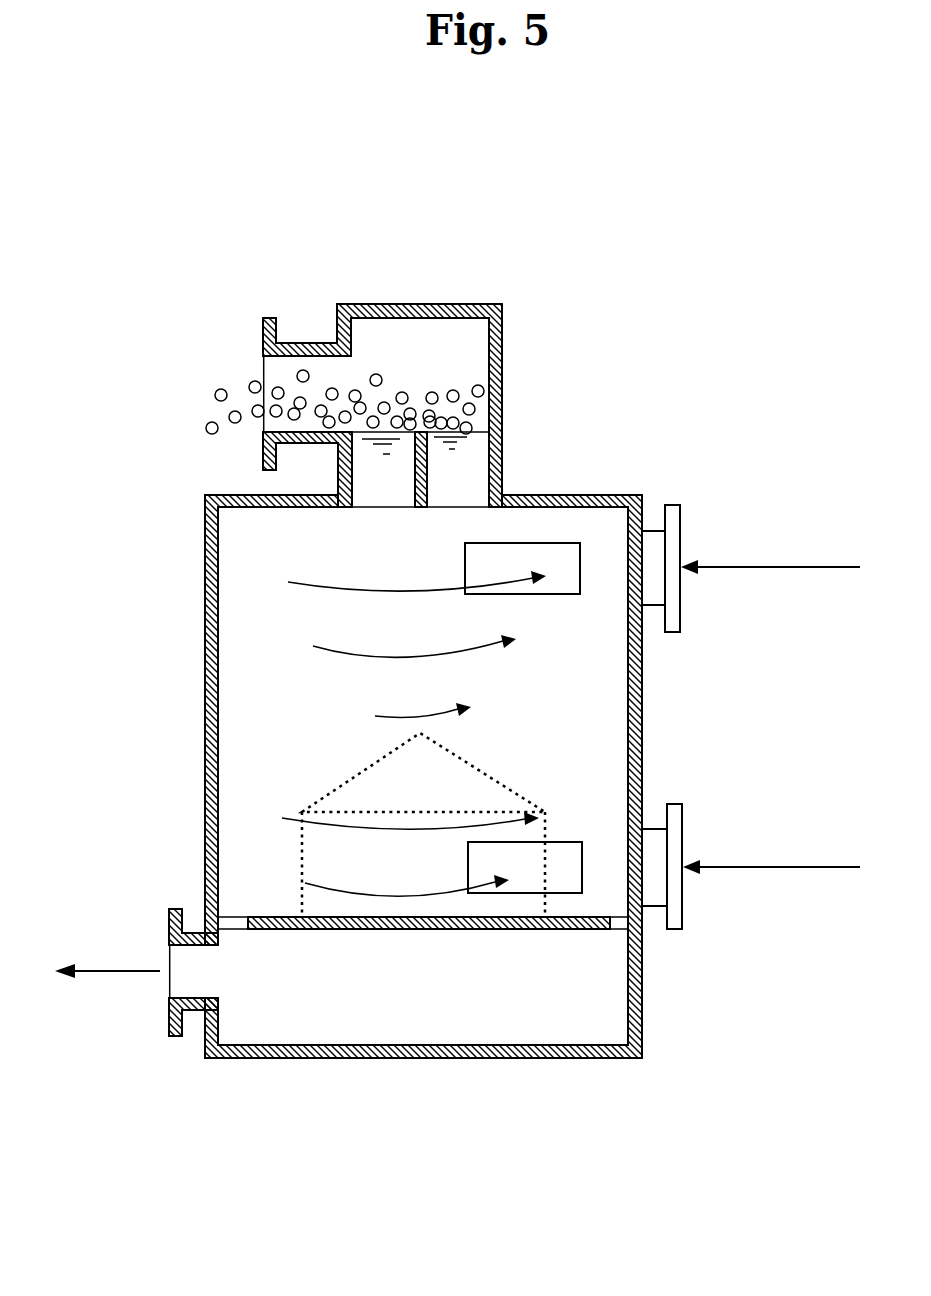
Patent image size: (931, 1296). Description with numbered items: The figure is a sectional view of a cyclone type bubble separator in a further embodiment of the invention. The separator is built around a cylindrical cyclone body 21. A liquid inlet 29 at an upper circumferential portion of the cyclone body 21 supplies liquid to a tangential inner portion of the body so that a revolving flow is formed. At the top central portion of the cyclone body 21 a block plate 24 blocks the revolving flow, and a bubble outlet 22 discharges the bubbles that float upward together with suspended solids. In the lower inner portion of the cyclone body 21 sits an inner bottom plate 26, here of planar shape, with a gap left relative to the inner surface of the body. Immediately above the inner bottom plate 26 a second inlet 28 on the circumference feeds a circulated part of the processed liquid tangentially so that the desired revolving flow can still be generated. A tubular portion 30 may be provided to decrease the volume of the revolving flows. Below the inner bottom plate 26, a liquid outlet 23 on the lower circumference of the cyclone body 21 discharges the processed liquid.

The cyclone body 21 is at (642, 772).
The bubble outlet 22 is at (328, 370).
The liquid outlet 23 is at (192, 973).
The block plate 24 is at (428, 478).
The inner bottom plate 26 is at (522, 929).
The second inlet 28 is at (655, 891).
The liquid inlet 29 is at (667, 513).
The tubular portion 30 is at (300, 852).